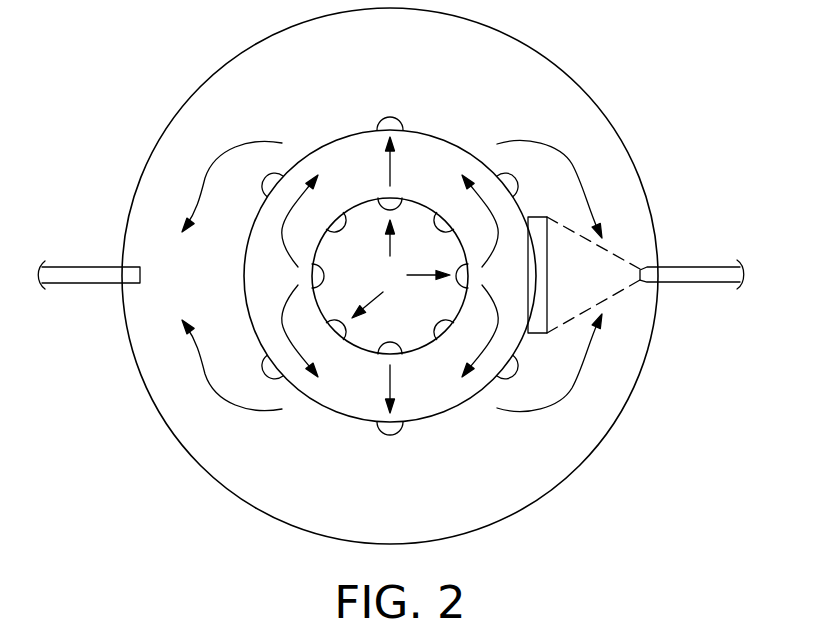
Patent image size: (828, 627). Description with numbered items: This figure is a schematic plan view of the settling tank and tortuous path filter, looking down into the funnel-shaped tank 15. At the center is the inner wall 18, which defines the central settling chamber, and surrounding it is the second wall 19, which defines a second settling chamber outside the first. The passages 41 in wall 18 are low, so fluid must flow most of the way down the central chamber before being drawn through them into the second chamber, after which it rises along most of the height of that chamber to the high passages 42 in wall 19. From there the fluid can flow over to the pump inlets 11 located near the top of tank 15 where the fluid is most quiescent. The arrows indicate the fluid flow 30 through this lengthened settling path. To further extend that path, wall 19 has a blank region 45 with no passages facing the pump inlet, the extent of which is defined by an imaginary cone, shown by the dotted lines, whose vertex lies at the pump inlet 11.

The pump inlet 11 is at (695, 287).
The tank 15 is at (575, 80).
The wall 18 is at (423, 348).
The second wall 19 is at (437, 137).
The fluid flow 30 is at (389, 248).
The passages 41 is at (397, 196).
The passages 42 is at (400, 433).
The blank region 45 is at (547, 285).